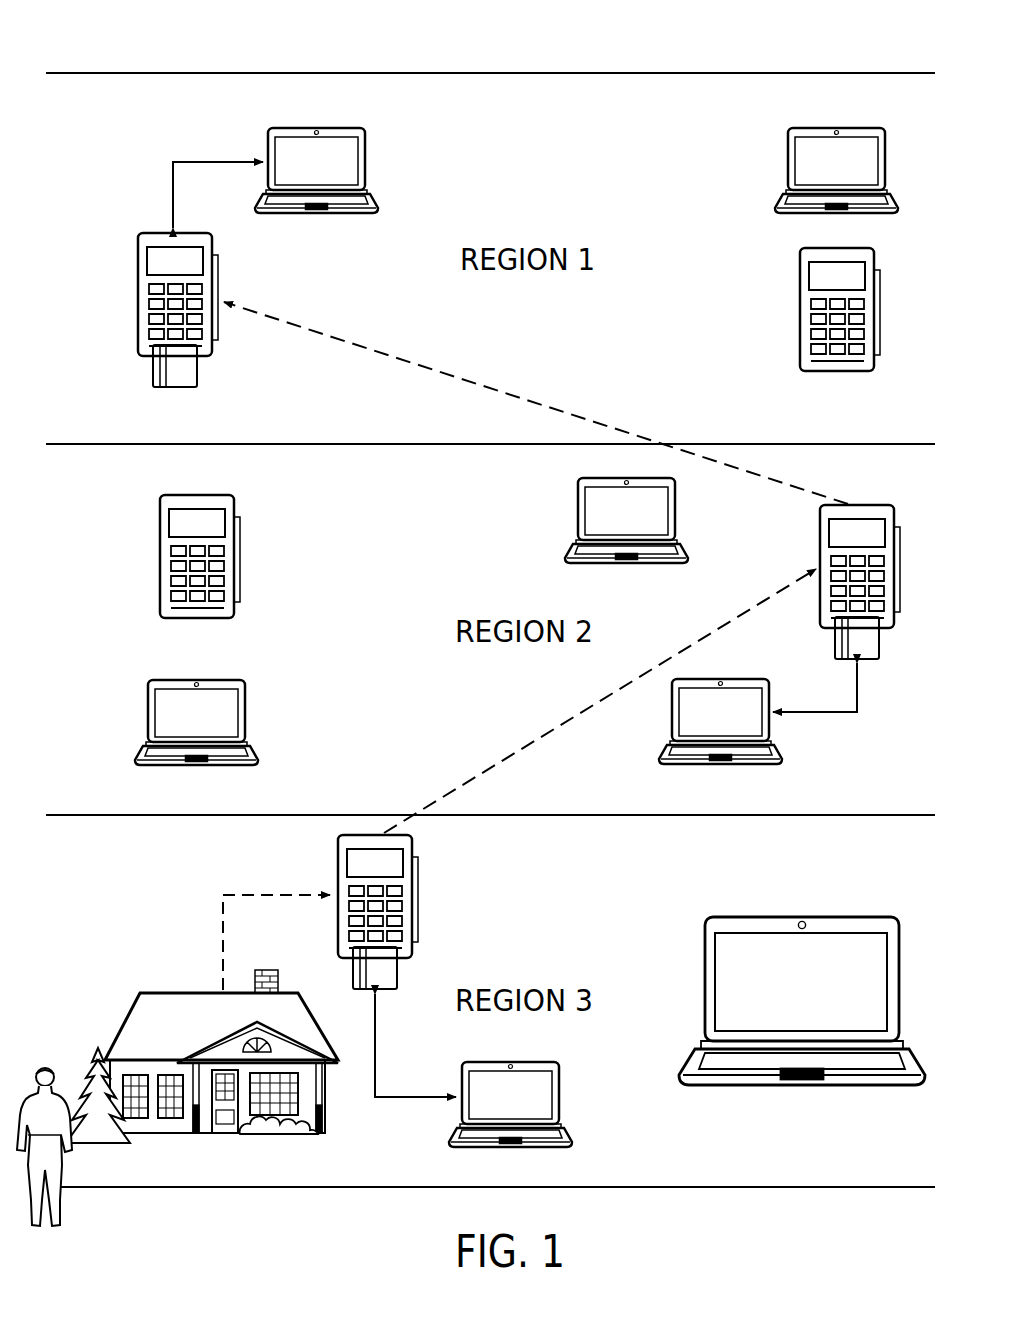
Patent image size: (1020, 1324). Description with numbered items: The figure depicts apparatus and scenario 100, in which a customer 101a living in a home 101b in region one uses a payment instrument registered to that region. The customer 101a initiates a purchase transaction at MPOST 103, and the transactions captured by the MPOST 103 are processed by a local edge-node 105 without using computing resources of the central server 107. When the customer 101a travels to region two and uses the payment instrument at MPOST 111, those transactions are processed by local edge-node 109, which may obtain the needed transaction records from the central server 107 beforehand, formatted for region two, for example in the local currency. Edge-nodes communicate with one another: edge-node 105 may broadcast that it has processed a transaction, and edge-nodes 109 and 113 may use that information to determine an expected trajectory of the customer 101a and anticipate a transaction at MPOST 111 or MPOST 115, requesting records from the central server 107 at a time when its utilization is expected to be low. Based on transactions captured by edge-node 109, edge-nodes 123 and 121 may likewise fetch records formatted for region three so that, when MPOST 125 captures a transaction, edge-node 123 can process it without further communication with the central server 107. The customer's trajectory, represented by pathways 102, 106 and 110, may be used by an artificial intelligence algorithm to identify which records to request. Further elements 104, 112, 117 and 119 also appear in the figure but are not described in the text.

The apparatus and scenario 100 is at (106, 40).
The customer 101a is at (58, 1198).
The home 101b is at (130, 1012).
The pathway 102 is at (222, 928).
The MPOST 103 is at (416, 912).
The connection between payment terminal and computing device 104 is at (380, 1032).
The edge-node 105 is at (560, 1095).
The pathway 106 is at (490, 763).
The central server 107 is at (705, 956).
The edge-node 109 is at (672, 722).
The pathway 110 is at (552, 405).
The MPOST 111 is at (825, 585).
The connection between payment terminal and computing device in region 1 112 is at (172, 175).
The edge-node 113 is at (578, 508).
The MPOST 115 is at (160, 558).
The computing device in region 2 117 is at (148, 710).
The payment terminal in region 1 119 is at (800, 307).
The edge-node 121 is at (788, 158).
The edge-node 123 is at (368, 160).
The MPOST 125 is at (166, 311).